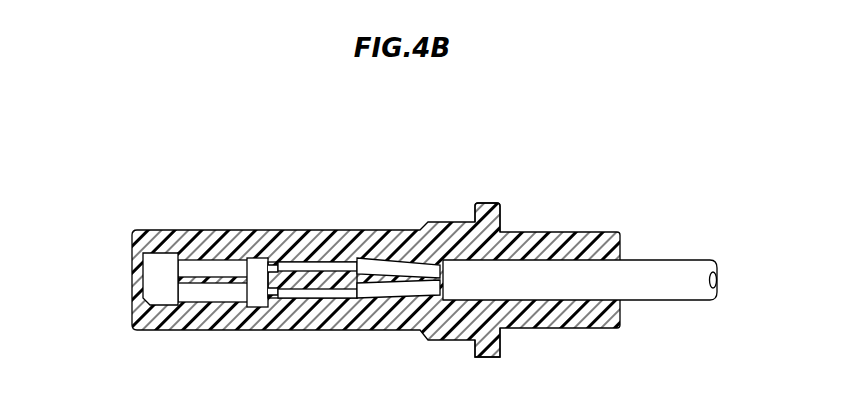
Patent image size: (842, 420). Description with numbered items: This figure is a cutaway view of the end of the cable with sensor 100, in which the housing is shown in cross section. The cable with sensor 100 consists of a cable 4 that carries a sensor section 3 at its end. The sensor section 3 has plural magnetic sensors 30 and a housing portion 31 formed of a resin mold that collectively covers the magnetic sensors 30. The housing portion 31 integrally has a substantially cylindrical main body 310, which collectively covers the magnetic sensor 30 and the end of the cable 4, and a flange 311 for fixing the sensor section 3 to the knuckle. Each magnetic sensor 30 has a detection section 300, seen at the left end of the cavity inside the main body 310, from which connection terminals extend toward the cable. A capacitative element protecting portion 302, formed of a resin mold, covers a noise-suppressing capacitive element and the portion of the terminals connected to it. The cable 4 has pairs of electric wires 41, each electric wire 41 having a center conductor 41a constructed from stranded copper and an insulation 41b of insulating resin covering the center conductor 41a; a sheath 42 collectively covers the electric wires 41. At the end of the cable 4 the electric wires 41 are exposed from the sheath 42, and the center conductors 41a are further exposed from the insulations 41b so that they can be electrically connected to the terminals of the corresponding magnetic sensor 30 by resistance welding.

The sensor section 3 is at (142, 207).
The cable 4 is at (690, 262).
The magnetic sensor 30 is at (136, 303).
The housing portion 31 is at (633, 232).
The electric wire 41 is at (365, 282).
The center conductor 41a is at (343, 272).
The insulation 41b is at (397, 274).
The sheath 42 is at (690, 292).
The cable with sensor 100 is at (597, 190).
The detection section 300 is at (157, 285).
The capacitative element protecting portion 302 is at (262, 262).
The main body 310 is at (163, 312).
The flange 311 is at (490, 205).